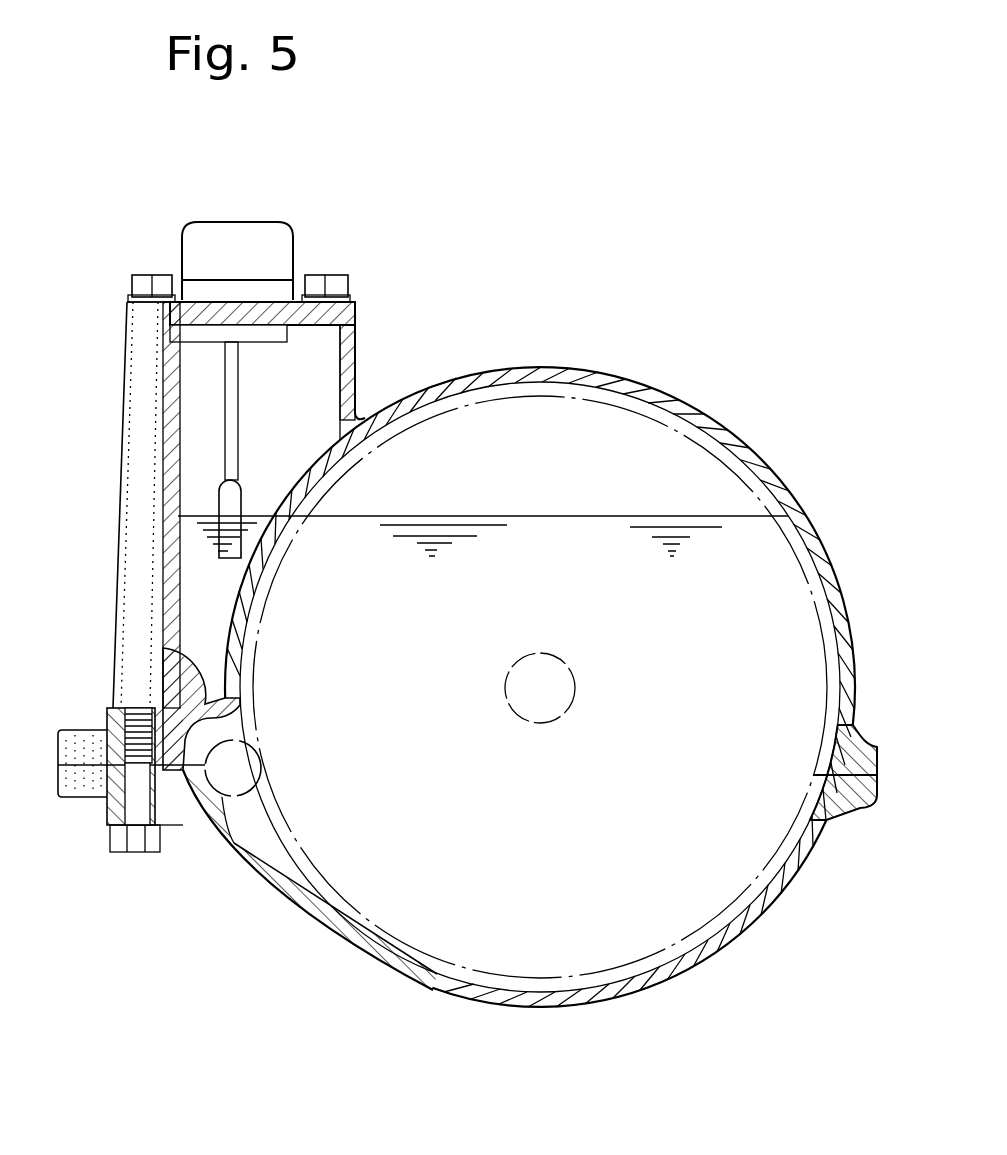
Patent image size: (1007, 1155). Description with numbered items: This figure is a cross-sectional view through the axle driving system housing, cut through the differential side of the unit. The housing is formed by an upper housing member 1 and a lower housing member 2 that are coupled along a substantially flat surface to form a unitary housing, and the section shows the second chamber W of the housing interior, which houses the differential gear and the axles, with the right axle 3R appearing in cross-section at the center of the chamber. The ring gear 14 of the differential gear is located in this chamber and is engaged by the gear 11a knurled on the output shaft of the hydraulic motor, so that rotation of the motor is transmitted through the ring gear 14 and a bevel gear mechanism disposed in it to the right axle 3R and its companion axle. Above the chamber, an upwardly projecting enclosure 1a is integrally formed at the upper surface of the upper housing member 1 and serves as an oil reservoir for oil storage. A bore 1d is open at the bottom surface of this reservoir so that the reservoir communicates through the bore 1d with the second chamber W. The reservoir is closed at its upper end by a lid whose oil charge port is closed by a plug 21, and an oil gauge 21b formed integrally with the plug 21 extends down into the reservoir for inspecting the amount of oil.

The upper housing member 1 is at (835, 580).
The enclosure 1a is at (357, 353).
The bore 1d is at (150, 650).
The lower housing member 2 is at (815, 842).
The right axle 3R is at (533, 725).
The second chamber W is at (810, 648).
The gear 11a is at (225, 847).
The ring gear 14 is at (310, 917).
The plug 21 is at (295, 237).
The oil gauge 21b is at (240, 387).